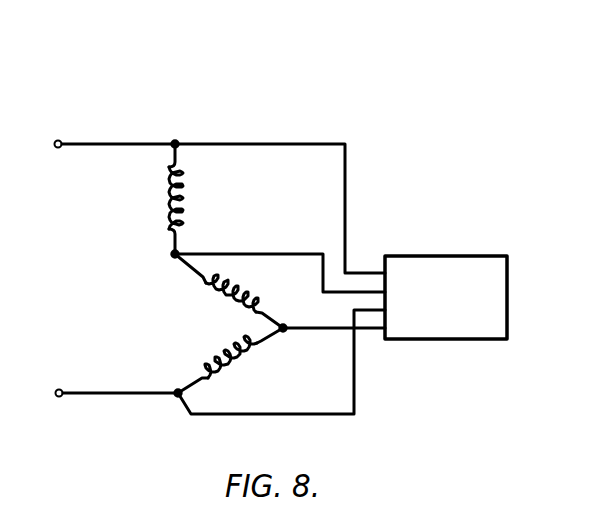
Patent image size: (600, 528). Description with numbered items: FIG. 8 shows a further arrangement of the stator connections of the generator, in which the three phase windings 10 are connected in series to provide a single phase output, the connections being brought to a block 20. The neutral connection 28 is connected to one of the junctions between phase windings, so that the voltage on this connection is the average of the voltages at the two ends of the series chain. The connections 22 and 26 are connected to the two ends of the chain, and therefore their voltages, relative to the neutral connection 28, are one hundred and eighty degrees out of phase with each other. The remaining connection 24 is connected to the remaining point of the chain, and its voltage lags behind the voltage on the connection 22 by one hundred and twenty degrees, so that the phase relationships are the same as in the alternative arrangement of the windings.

The three-phase motor stator windings 10 is at (160, 254).
The control circuit 20 is at (459, 309).
The connection 22 is at (300, 143).
The connection 24 is at (306, 330).
The connection 26 is at (303, 416).
The neutral connection 28 is at (270, 252).